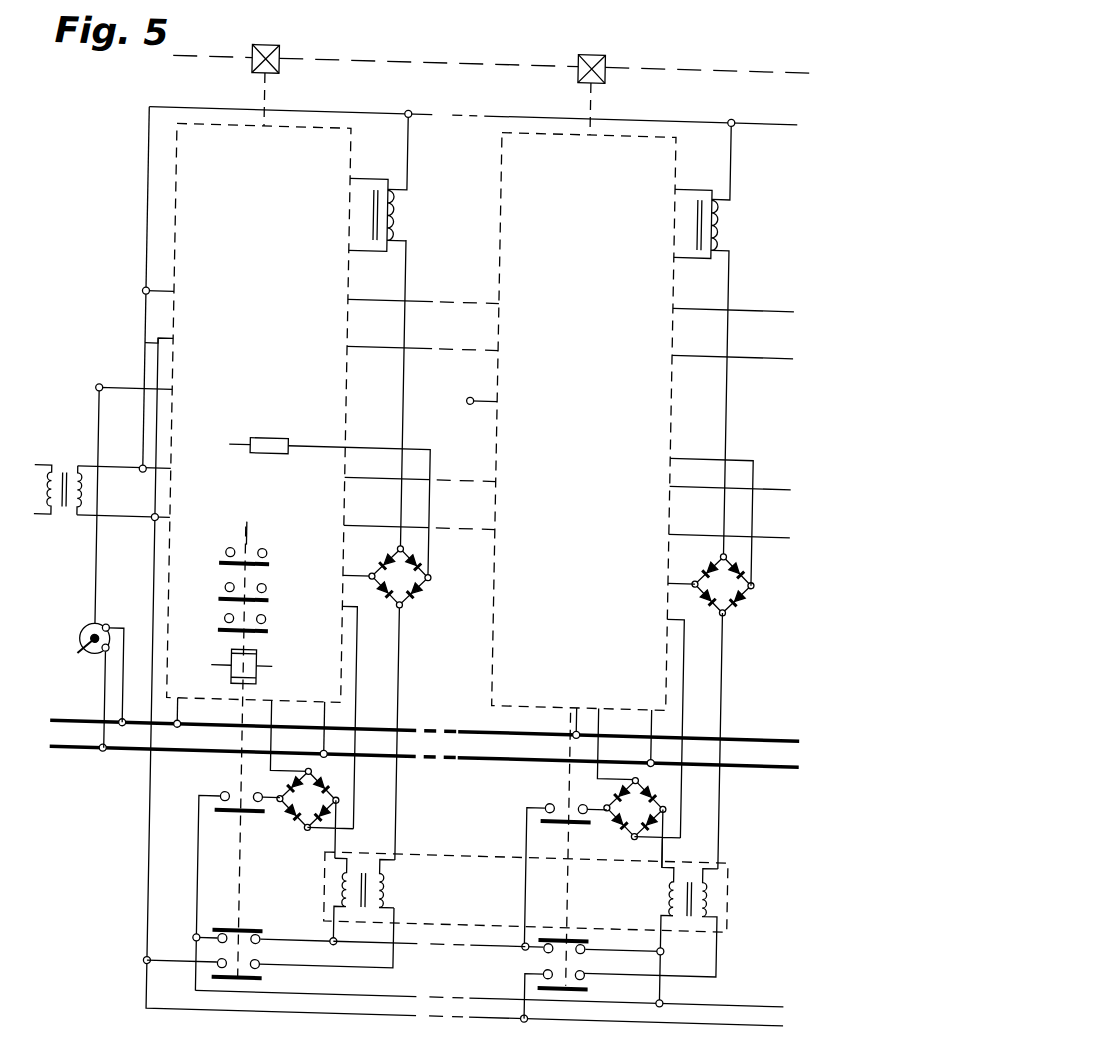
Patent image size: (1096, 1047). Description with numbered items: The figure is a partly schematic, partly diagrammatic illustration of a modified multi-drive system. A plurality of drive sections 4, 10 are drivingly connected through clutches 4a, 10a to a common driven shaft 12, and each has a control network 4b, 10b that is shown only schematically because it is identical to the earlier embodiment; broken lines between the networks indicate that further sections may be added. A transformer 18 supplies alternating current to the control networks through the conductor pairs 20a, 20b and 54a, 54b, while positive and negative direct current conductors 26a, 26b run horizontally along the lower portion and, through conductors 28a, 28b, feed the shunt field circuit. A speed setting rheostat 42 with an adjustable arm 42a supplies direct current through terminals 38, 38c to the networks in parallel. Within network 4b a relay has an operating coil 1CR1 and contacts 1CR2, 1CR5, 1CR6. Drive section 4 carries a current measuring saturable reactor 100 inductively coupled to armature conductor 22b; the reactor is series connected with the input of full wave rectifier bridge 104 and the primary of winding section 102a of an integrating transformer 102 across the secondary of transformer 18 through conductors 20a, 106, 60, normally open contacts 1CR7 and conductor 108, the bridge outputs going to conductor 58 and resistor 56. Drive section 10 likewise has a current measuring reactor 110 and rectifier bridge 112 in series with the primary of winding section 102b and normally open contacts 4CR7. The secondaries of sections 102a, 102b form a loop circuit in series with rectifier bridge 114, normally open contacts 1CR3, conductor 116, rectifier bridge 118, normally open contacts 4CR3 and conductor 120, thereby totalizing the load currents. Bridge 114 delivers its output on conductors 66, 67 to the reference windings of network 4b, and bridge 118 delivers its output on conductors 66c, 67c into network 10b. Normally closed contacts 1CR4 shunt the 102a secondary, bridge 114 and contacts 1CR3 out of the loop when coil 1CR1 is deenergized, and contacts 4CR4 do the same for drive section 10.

The drive section 4 is at (199, 107).
The clutch 4a is at (272, 61).
The control network 4b is at (345, 156).
The drive section 10 is at (552, 103).
The clutch 10a is at (598, 63).
The control network 10b is at (670, 164).
The common driven shaft 12 is at (397, 70).
The transformer 18 is at (62, 476).
The conductor 20a is at (140, 304).
The conductor 20b is at (140, 354).
The conductor 22b is at (346, 192).
The positive conductor 26a is at (92, 732).
The negative conductor 26b is at (77, 767).
The conductor 28a is at (184, 720).
The conductor 28b is at (328, 758).
The terminal 38 is at (94, 399).
The terminal 38c is at (466, 401).
The speed setting rheostat 42 is at (101, 636).
The adjustable arm 42a is at (81, 668).
The conductor 54a is at (123, 478).
The conductor 54b is at (124, 527).
The resistor 56 is at (268, 445).
The conductor 58 is at (348, 578).
The conductor 60 is at (402, 424).
The conductor 66 is at (278, 718).
The conductor 66c is at (604, 721).
The conductor 67 is at (358, 660).
The conductor 67c is at (703, 673).
The current measuring saturable reactor 100 is at (386, 216).
The integrating transformer 102 is at (483, 857).
The transformer winding section 102a is at (396, 864).
The transformer winding section 102b is at (668, 863).
The full wave rectifier bridge 104 is at (395, 587).
The conductor 106 is at (141, 163).
The conductor 108 is at (153, 861).
The current measuring reactor 110 is at (708, 217).
The full wave rectifier bridge 112 is at (718, 586).
The full wave rectifier bridge 114 is at (307, 812).
The conductor 116 is at (410, 998).
The full wave rectifier bridge 118 is at (634, 812).
The conductor 120 is at (436, 948).
The operating coil 1CR1 is at (260, 665).
The relay contacts 1CR2 is at (263, 619).
The normally open contacts 1CR3 is at (235, 796).
The normally closed contacts 1CR4 is at (274, 940).
The relay contacts 1CR5 is at (262, 588).
The relay contacts 1CR6 is at (253, 552).
The normally open contacts 1CR7 is at (251, 967).
The normally open contacts 4CR3 is at (567, 798).
The normally closed contacts 4CR4 is at (587, 932).
The normally open contacts 4CR7 is at (581, 969).